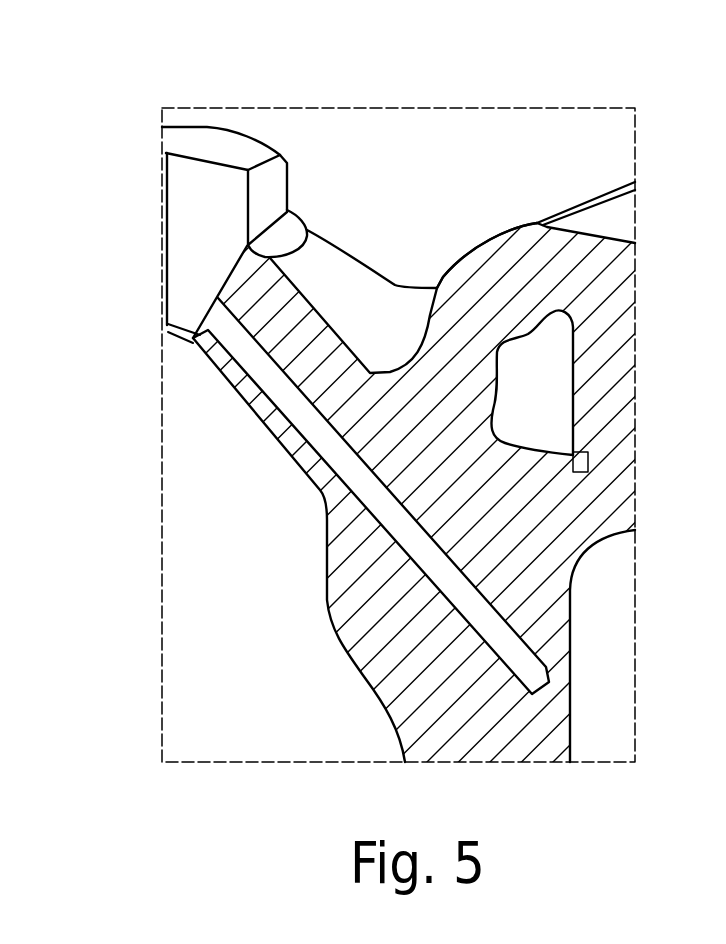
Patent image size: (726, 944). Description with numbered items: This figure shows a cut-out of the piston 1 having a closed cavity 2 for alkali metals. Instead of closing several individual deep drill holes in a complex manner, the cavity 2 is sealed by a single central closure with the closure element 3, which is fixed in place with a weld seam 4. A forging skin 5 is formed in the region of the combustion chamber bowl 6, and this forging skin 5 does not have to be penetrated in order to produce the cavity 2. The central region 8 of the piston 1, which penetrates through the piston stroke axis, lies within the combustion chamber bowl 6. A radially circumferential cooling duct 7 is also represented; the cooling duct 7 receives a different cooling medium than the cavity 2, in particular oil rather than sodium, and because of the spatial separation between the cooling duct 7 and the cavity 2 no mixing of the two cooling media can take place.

The piston 1 is at (186, 100).
The cavity 2 is at (560, 683).
The closure element 3 is at (201, 201).
The weld seam 4 is at (233, 299).
The forging skin 5 is at (333, 192).
The combustion chamber bowl 6 is at (464, 192).
The cooling duct 7 is at (542, 398).
The central region 8 is at (162, 327).